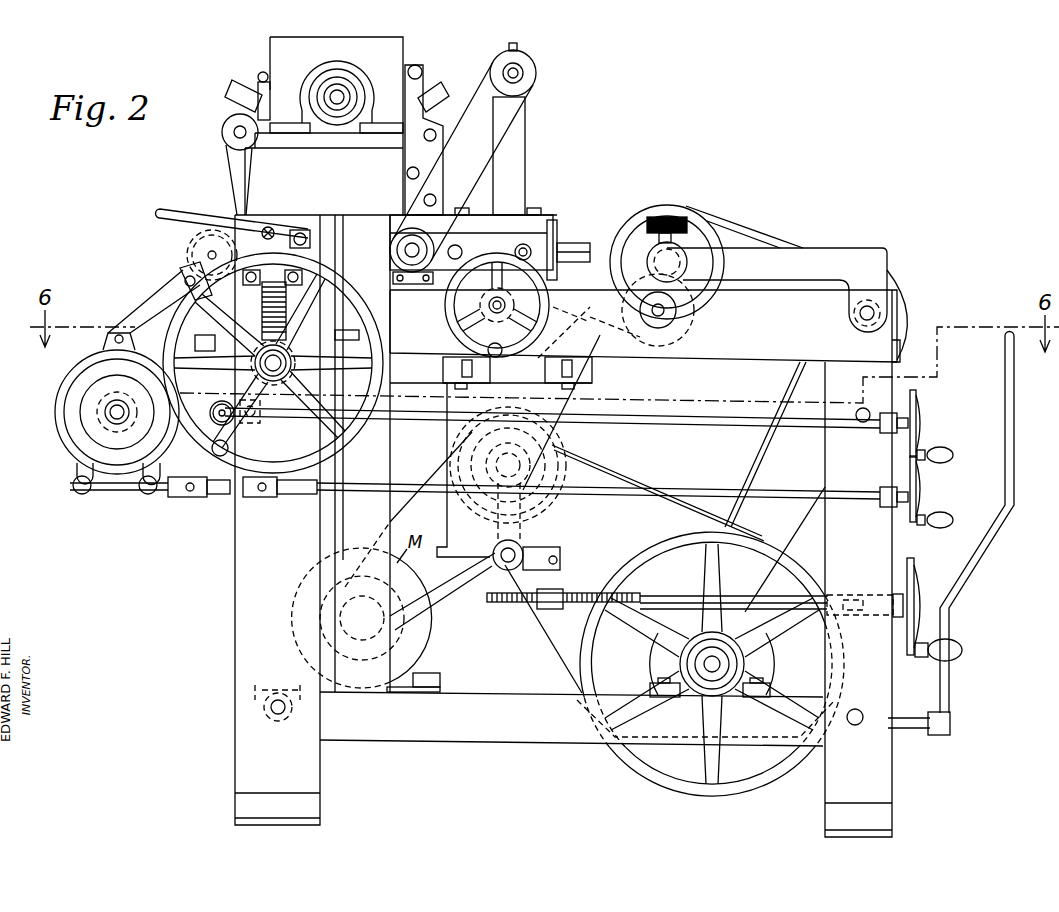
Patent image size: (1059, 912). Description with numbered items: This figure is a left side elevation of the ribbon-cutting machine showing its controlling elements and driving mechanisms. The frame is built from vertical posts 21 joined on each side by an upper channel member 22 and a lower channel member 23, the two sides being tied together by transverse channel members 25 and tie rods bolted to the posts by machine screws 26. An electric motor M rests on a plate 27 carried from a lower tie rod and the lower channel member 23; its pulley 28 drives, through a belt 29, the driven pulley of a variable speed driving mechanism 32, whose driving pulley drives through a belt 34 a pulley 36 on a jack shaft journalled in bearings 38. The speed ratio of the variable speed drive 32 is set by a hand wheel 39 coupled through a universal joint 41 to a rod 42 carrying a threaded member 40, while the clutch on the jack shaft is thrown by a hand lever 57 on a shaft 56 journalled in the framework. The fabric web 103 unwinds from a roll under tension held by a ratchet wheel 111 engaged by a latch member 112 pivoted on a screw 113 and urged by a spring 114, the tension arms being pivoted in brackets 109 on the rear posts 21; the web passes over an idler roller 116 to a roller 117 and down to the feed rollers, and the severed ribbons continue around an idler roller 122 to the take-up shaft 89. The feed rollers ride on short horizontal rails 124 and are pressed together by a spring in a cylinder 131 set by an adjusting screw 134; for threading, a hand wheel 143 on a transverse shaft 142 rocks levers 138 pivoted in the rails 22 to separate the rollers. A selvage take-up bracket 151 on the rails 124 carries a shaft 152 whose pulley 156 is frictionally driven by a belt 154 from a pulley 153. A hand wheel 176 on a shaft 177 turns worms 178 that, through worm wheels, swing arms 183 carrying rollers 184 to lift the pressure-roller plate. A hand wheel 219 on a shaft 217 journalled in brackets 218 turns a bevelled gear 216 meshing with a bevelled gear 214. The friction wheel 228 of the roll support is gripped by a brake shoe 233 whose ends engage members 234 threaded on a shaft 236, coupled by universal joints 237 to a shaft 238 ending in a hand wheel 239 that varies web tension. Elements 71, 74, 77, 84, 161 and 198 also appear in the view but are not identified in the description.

The vertical posts 21 is at (252, 738).
The upper channel member 22 is at (765, 346).
The lower channel member 23 is at (520, 730).
The channel members 25 is at (495, 367).
The machine screws 26 is at (865, 409).
The plate 27 is at (398, 692).
The pulley 28 is at (395, 633).
The belt 29 is at (460, 556).
The variable speed driving mechanism 32 is at (560, 512).
The belt 34 is at (656, 480).
The pulley 36 is at (646, 546).
The bearings 38 is at (670, 652).
The hand wheel 39 is at (920, 590).
The member 40 is at (540, 612).
The universal joint 41 is at (867, 592).
The rod 42 is at (740, 598).
The shaft 56 is at (905, 728).
The clutch operating hand lever 57 is at (1017, 449).
The motor 71 is at (345, 88).
The diagonal brace 74 is at (758, 461).
The pivot pin 77 is at (872, 307).
The arm 84 is at (810, 258).
The take-up shaft 89 is at (705, 216).
The fabric web 103 is at (236, 158).
The brackets 109 is at (192, 241).
The toothed ratchet wheel 111 is at (186, 276).
The latch member 112 is at (193, 210).
The screw 113 is at (294, 232).
The spring 114 is at (269, 228).
The idler roller 116 is at (238, 120).
The roller 117 is at (425, 120).
The idler roller 122 is at (690, 312).
The short horizontal rails 124 is at (535, 230).
The cylinder 131 is at (560, 240).
The adjusting screw 134 is at (580, 252).
The levers 138 is at (517, 300).
The transverse shaft 142 is at (480, 305).
The hand wheel 143 is at (458, 323).
The brackets 151 is at (527, 167).
The shaft 152 is at (520, 73).
The pulley 153 is at (530, 63).
The belt 154 is at (456, 134).
The pulley 156 is at (395, 262).
The bracket 161 is at (345, 519).
The hand wheel 176 is at (187, 297).
The shaft 177 is at (248, 329).
The worms 178 is at (312, 380).
The arms 183 is at (335, 320).
The rollers 184 is at (348, 335).
The pin 198 is at (247, 84).
The bevelled gear 214 is at (224, 406).
The bevelled gear 216 is at (269, 426).
The shaft 217 is at (725, 426).
The brackets 218 is at (885, 433).
The hand wheel 219 is at (920, 421).
The friction wheel 228 is at (77, 440).
The brake shoe 233 is at (118, 420).
The members 234 is at (88, 494).
The shaft 236 is at (164, 498).
The universal joints 237 is at (205, 505).
The shaft 238 is at (695, 491).
The hand wheel 239 is at (920, 488).